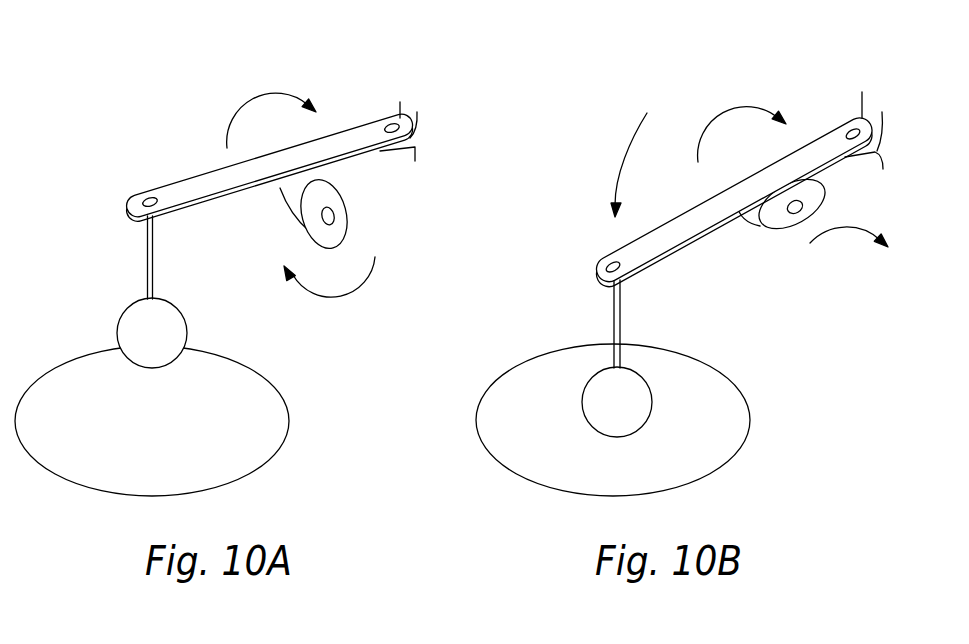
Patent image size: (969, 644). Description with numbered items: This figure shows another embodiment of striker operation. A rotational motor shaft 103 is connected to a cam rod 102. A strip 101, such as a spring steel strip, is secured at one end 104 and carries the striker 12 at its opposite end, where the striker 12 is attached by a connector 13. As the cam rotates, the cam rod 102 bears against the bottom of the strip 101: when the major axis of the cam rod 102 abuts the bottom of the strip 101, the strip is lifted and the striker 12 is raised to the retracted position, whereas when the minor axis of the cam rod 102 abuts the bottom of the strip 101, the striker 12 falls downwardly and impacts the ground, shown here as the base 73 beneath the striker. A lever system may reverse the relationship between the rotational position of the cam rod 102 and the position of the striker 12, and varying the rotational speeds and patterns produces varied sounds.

In FIG. 10A, the striker 12 is at (127, 325).
In FIG. 10B, the striker 12 is at (595, 390).
In FIG. 10A, the connector 13 is at (147, 257).
In FIG. 10B, the connector 13 is at (623, 318).
In FIG. 10A, the base 73 is at (268, 413).
In FIG. 10B, the base 73 is at (728, 407).
In FIG. 10A, the strip 101 is at (203, 188).
In FIG. 10B, the strip 101 is at (632, 255).
In FIG. 10A, the cam rod 102 is at (340, 192).
In FIG. 10B, the cam rod 102 is at (828, 177).
In FIG. 10A, the rotational motor shaft 103 is at (327, 218).
In FIG. 10B, the rotational motor shaft 103 is at (790, 215).
In FIG. 10A, the end 104 is at (374, 124).
In FIG. 10B, the end 104 is at (833, 140).